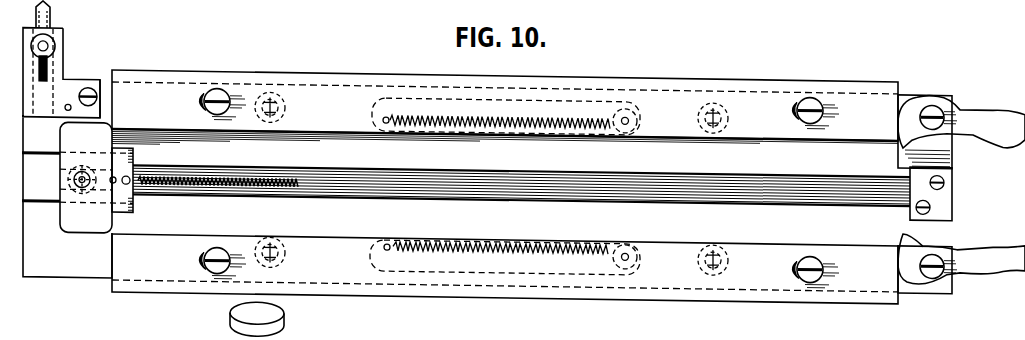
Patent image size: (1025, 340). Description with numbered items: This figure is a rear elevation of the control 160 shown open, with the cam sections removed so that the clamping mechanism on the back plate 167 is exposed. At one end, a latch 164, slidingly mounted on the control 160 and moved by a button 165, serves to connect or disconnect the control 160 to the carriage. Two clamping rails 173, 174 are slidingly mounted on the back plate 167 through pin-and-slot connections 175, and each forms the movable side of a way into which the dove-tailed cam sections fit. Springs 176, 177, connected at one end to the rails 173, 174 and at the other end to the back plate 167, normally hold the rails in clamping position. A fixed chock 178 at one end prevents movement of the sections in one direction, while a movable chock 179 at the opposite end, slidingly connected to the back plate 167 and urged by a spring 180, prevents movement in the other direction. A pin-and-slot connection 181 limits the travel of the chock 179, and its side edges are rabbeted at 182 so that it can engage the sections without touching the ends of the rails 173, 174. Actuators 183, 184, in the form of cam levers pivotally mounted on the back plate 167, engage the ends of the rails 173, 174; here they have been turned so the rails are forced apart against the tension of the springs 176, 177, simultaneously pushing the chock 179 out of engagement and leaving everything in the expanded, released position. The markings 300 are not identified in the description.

The control 160 is at (522, 164).
The latch 164 is at (50, 22).
The button 165 is at (56, 45).
The back plate 167 is at (466, 159).
The clamping rail 173 is at (358, 68).
The clamping rail 174 is at (345, 292).
The pin-and-slot connection 175 is at (220, 88).
The spring 176 is at (550, 112).
The spring 177 is at (575, 247).
The fixed chock 178 is at (945, 185).
The movable chock 179 is at (96, 177).
The spring 180 is at (182, 196).
The pin-and-slot connection 181 is at (68, 180).
The rabbeted side edges 182 is at (100, 116).
The actuator 183 is at (953, 100).
The actuator 184 is at (973, 256).
The adjusting nut 300 is at (284, 109).